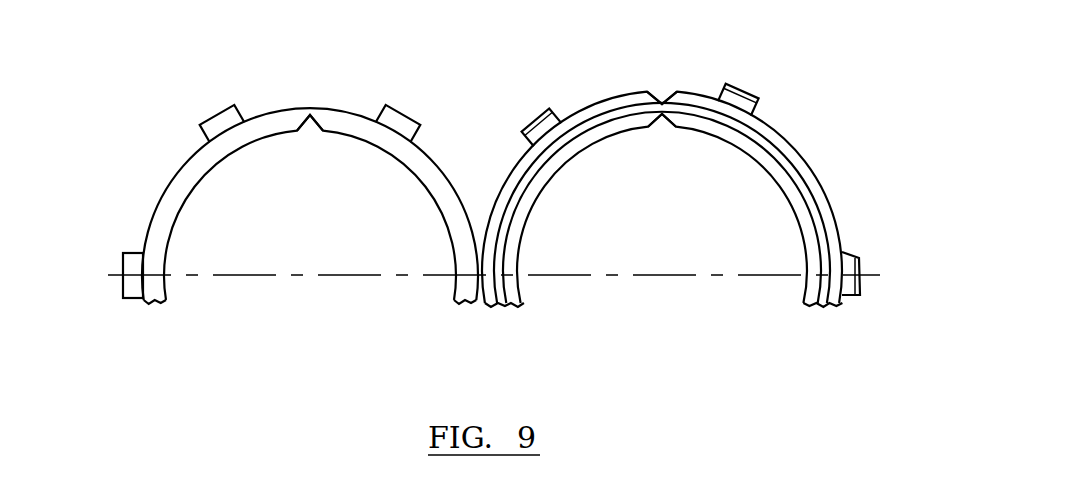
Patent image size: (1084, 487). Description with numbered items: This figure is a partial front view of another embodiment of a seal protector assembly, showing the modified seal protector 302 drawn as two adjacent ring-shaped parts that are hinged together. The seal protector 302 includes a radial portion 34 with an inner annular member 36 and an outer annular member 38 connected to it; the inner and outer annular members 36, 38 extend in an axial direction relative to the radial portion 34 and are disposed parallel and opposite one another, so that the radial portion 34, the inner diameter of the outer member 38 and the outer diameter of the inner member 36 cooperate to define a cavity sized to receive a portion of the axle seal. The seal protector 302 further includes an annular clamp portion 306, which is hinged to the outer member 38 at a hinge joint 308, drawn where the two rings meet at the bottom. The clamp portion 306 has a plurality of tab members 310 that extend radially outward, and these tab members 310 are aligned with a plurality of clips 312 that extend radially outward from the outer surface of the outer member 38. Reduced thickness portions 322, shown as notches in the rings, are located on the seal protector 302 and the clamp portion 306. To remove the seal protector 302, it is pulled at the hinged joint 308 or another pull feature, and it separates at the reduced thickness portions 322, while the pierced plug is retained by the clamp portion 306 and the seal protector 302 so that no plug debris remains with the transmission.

The seal protector 302 is at (682, 160).
The clamp portion 306 is at (305, 108).
The hinge joint 308 is at (474, 265).
The tab members 310 is at (216, 112).
The clips 312 is at (532, 119).
The reduced thickness portions 322 is at (310, 134).
The radial portion 34 is at (612, 104).
The inner annular member 36 is at (548, 176).
The outer annular member 38 is at (505, 186).